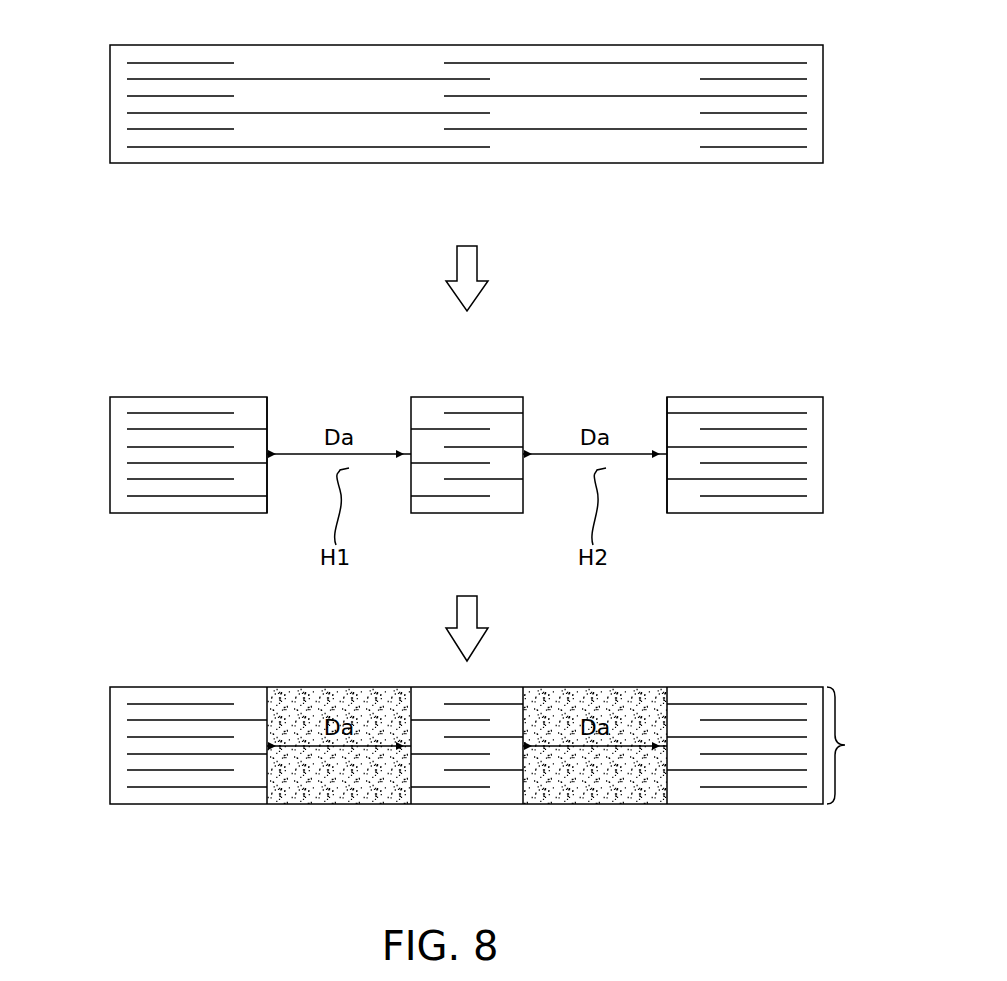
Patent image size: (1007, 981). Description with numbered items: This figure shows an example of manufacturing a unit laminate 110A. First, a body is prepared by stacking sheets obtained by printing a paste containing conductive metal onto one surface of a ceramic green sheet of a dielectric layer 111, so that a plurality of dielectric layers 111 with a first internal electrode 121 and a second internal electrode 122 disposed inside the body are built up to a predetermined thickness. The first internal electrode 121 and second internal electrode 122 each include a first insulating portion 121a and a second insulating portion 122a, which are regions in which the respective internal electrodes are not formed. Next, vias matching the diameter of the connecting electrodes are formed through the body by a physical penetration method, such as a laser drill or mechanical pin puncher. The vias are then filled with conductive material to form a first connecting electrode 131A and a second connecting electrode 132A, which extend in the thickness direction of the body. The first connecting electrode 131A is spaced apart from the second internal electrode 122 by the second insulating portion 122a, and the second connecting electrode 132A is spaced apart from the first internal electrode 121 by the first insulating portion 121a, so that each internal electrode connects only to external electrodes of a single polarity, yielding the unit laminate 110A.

The dielectric layer 111 is at (142, 121).
The first internal electrode 121 is at (142, 79).
The second internal electrode 122 is at (142, 63).
The first insulating portion 121a is at (690, 428).
The second insulating portion 122a is at (253, 413).
The first connecting electrode 131A is at (338, 800).
The second connecting electrode 132A is at (590, 800).
The unit laminate 110A is at (866, 745).